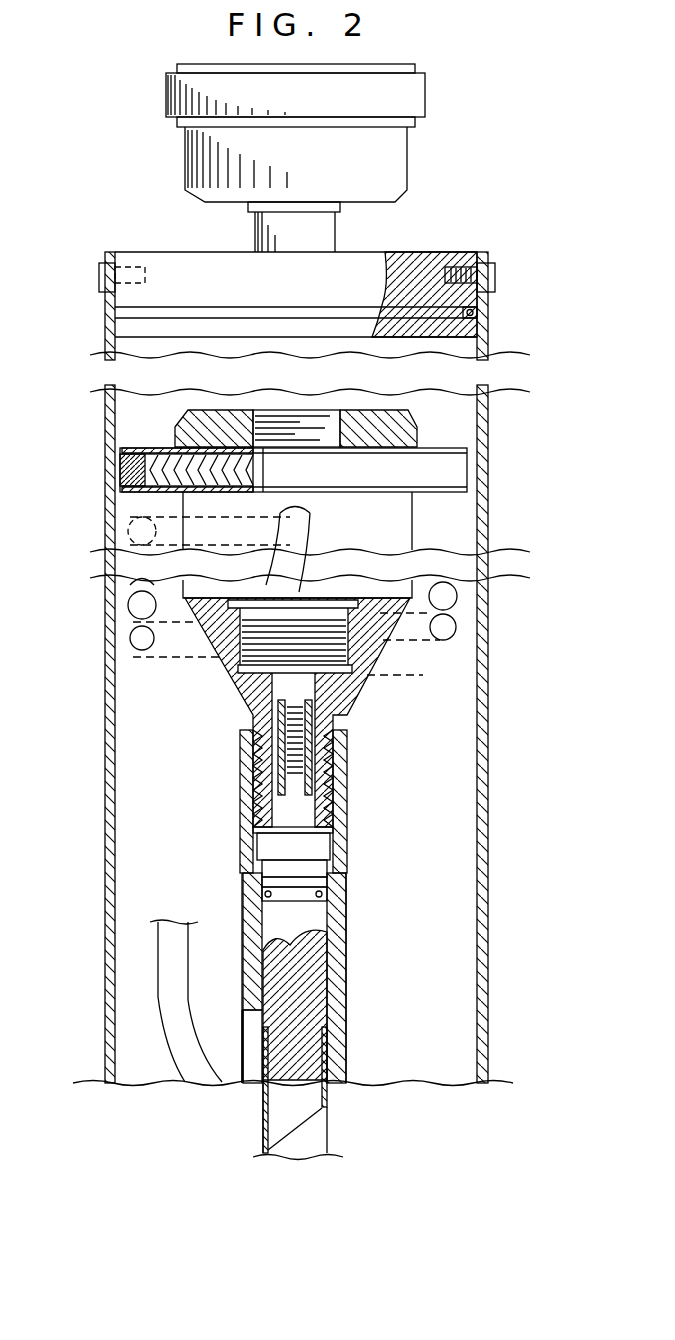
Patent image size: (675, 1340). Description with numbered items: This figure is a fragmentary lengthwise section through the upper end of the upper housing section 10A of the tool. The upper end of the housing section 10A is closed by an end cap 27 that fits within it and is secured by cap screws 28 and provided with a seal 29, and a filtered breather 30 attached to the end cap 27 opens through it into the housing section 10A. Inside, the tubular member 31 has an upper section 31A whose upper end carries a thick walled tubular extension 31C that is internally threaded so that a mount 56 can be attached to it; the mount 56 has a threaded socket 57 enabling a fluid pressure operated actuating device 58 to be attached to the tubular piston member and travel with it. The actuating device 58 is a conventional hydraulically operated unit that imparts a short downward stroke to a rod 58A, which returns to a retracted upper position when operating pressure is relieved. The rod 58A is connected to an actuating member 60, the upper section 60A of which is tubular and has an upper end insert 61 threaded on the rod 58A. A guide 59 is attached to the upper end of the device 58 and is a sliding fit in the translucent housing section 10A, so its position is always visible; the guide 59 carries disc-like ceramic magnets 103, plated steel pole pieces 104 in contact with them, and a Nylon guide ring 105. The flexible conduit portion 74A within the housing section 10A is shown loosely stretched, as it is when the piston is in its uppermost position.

The filtered breather 30 is at (407, 155).
The end cap 27 is at (148, 250).
The cap screws 28 is at (497, 272).
The seal 29 is at (480, 327).
The housing section 10A is at (488, 843).
The guide 59 is at (447, 441).
The guide ring 105 is at (460, 470).
The plated steel pole pieces 104 is at (132, 500).
The disc-like ceramic magnets 103 is at (263, 460).
The fluid pressure operated actuating device 58 is at (418, 525).
The conduit portion 74A is at (440, 657).
The mount 56 is at (232, 680).
The threaded socket 57 is at (350, 668).
The rod 58A is at (300, 693).
The thick walled tubular extension 31C is at (240, 802).
The tubular member 31 is at (351, 1057).
The upper section 31A is at (242, 1052).
The upper end insert 61 is at (332, 1003).
The actuating member 60 is at (333, 1115).
The section 60A is at (317, 1135).